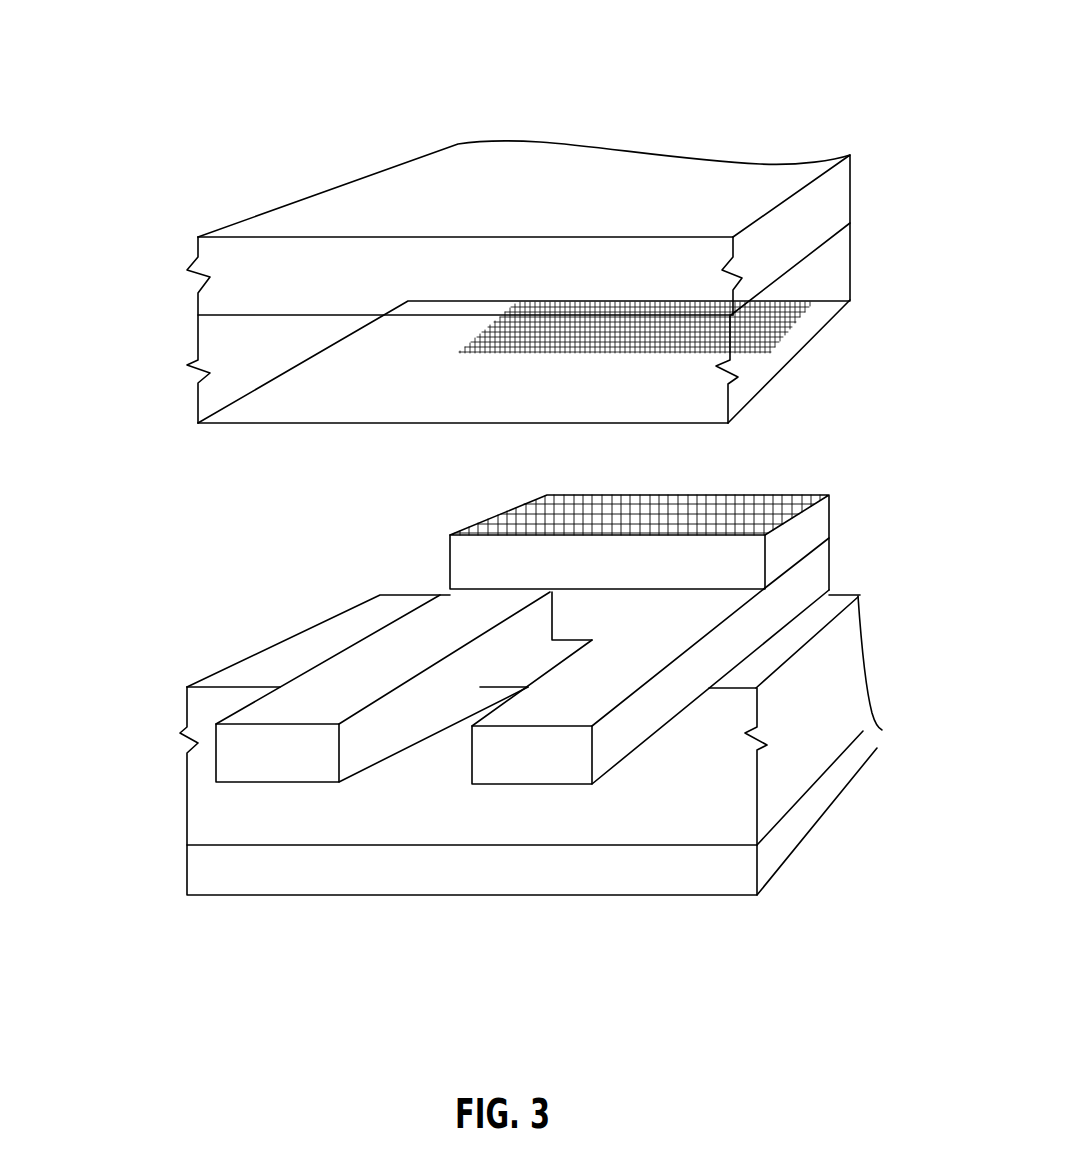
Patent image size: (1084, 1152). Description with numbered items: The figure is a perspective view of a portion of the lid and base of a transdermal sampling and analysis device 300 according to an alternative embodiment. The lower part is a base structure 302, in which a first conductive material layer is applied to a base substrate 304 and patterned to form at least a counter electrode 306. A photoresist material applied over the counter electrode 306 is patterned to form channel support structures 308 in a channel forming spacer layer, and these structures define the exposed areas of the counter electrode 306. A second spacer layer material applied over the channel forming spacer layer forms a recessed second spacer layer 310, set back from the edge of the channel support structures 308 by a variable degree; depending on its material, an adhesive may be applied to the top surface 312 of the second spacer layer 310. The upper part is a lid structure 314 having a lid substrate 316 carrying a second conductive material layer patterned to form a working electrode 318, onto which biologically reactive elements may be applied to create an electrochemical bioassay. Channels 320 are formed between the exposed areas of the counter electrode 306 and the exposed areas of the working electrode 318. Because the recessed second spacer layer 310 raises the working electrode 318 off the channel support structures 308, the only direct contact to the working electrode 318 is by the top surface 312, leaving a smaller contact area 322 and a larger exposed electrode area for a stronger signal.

The transdermal sampling and analysis device 300 is at (816, 59).
The base structure 302 is at (140, 566).
The base substrate 304 is at (775, 860).
The counter electrode 306 is at (857, 652).
The channel support structures 308 is at (820, 565).
The second spacer layer 310 is at (817, 520).
The top surface 312 is at (590, 510).
The lid structure 314 is at (140, 213).
The lid substrate 316 is at (837, 185).
The working electrode 318 is at (838, 255).
The channels 320 is at (482, 645).
The contact area 322 is at (790, 325).